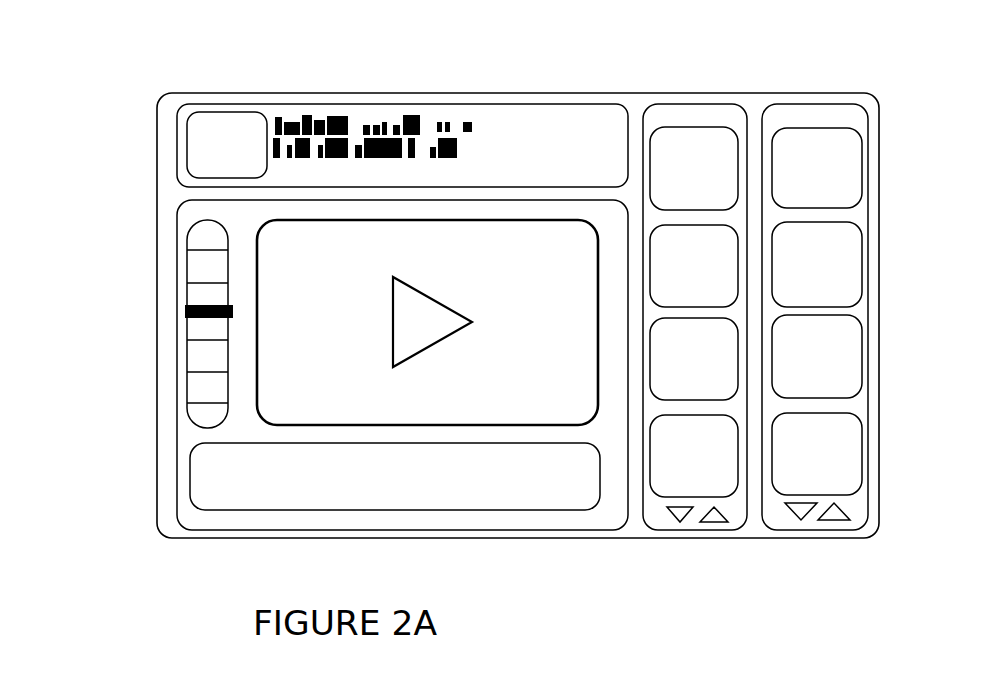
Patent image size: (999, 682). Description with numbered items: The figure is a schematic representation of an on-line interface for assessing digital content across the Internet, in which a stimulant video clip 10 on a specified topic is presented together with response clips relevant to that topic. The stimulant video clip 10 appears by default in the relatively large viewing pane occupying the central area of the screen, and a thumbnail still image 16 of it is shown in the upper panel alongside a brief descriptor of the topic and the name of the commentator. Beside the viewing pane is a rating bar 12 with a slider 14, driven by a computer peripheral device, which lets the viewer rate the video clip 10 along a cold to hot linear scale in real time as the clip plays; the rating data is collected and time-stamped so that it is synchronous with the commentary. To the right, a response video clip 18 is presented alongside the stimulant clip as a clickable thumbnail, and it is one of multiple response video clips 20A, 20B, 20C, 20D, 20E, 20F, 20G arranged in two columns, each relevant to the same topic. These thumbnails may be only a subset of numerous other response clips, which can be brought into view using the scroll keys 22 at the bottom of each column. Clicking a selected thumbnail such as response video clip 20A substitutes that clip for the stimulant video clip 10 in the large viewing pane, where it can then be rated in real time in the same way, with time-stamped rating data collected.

The stimulant video clip 10 is at (457, 293).
The rating bar 12 is at (207, 358).
The slider 14 is at (187, 305).
The thumbnail still image 16 is at (232, 145).
The response video clip 18 is at (698, 167).
The response video clip 20A is at (822, 143).
The response video clip 20B is at (670, 281).
The response video clip 20C is at (793, 281).
The response video clip 20D is at (670, 374).
The response video clip 20E is at (793, 374).
The response video clip 20F is at (670, 470).
The response video clip 20G is at (793, 470).
The scroll keys 22 is at (693, 517).